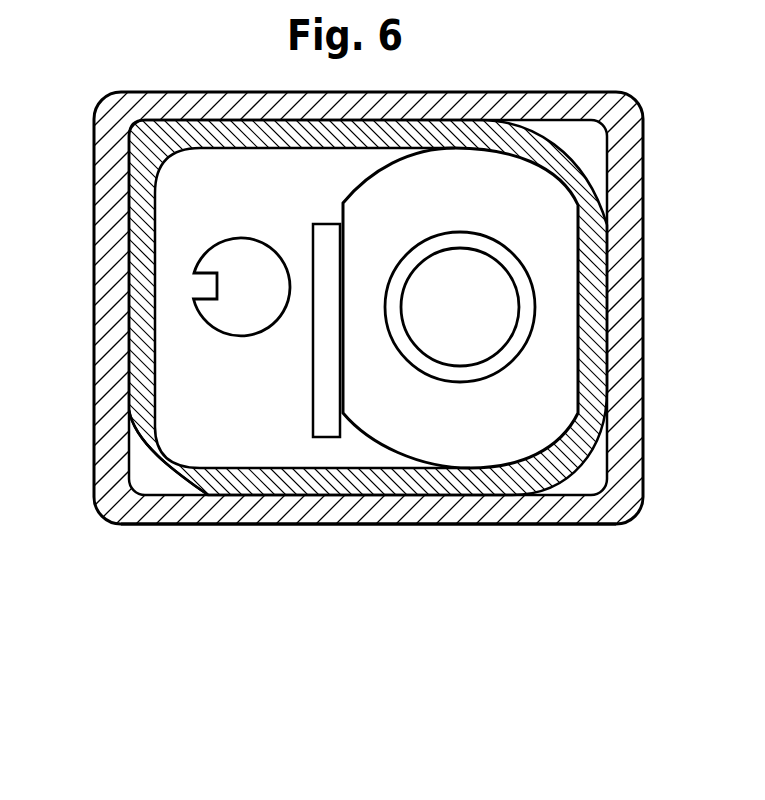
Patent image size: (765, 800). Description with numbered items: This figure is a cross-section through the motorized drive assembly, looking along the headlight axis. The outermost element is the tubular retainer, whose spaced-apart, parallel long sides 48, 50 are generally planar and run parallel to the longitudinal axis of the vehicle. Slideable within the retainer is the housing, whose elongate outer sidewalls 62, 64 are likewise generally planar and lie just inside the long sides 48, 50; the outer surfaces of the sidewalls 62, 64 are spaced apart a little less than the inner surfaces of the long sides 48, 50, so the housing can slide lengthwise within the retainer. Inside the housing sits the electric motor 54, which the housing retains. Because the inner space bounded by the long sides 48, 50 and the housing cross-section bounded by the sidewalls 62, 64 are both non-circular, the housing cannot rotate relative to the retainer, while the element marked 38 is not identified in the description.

The long side 48 is at (418, 92).
The long side 50 is at (313, 525).
The outer sidewall 62 is at (530, 130).
The outer sidewall 64 is at (208, 493).
The electric motor 54 is at (447, 442).
The keyed pin 38 is at (220, 335).